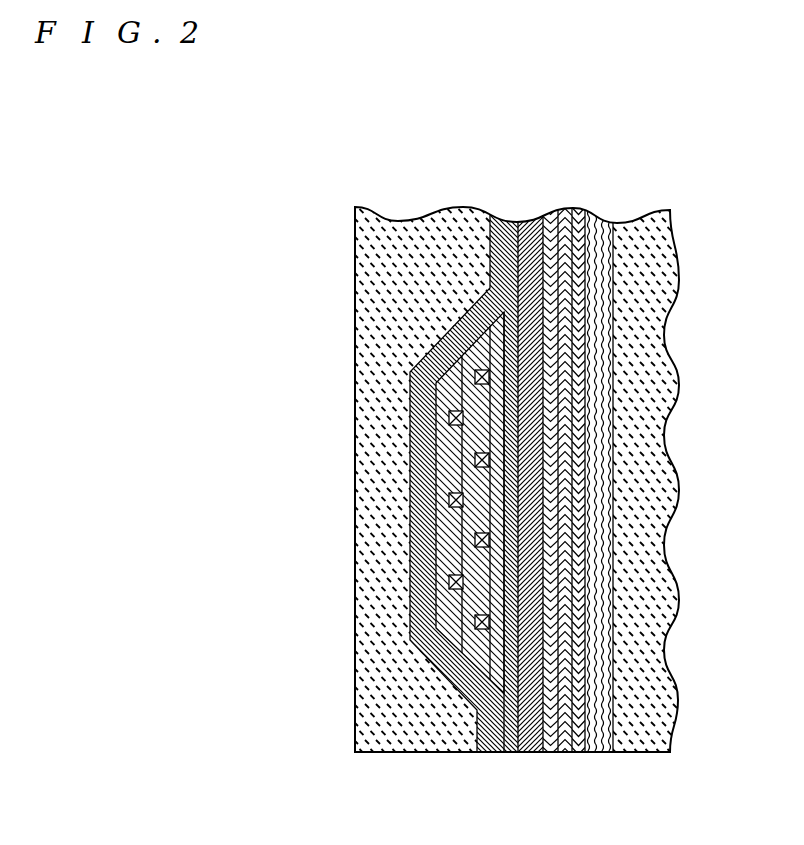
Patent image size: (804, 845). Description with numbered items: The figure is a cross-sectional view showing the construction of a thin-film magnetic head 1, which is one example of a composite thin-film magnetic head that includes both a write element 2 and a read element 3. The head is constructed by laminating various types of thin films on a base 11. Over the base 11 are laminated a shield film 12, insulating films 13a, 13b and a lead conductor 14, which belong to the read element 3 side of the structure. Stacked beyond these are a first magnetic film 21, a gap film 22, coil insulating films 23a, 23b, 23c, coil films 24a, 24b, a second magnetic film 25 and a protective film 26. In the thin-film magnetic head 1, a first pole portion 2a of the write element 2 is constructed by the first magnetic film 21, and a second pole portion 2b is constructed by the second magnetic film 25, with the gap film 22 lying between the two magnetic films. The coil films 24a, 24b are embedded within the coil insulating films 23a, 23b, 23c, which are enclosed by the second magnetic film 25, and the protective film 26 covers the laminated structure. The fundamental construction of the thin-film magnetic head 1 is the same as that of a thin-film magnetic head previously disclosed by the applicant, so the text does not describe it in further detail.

The thin-film magnetic head 1 is at (508, 132).
The write element 2 is at (474, 770).
The first pole portion 2a is at (493, 688).
The second pole portion 2b is at (470, 722).
The read element 3 is at (565, 753).
The base 11 is at (633, 222).
The shield film 12 is at (605, 210).
The insulating film 13a is at (580, 209).
The insulating film 13b is at (550, 210).
The lead conductor 14 is at (562, 210).
The first magnetic film 21 is at (532, 753).
The gap film 22 is at (513, 753).
The coil insulating film 23a is at (495, 490).
The coil insulating film 23b is at (477, 442).
The coil insulating film 23c is at (440, 535).
The coil film 24a is at (483, 537).
The coil film 24b is at (449, 500).
The second magnetic film 25 is at (485, 753).
The protective film 26 is at (413, 753).